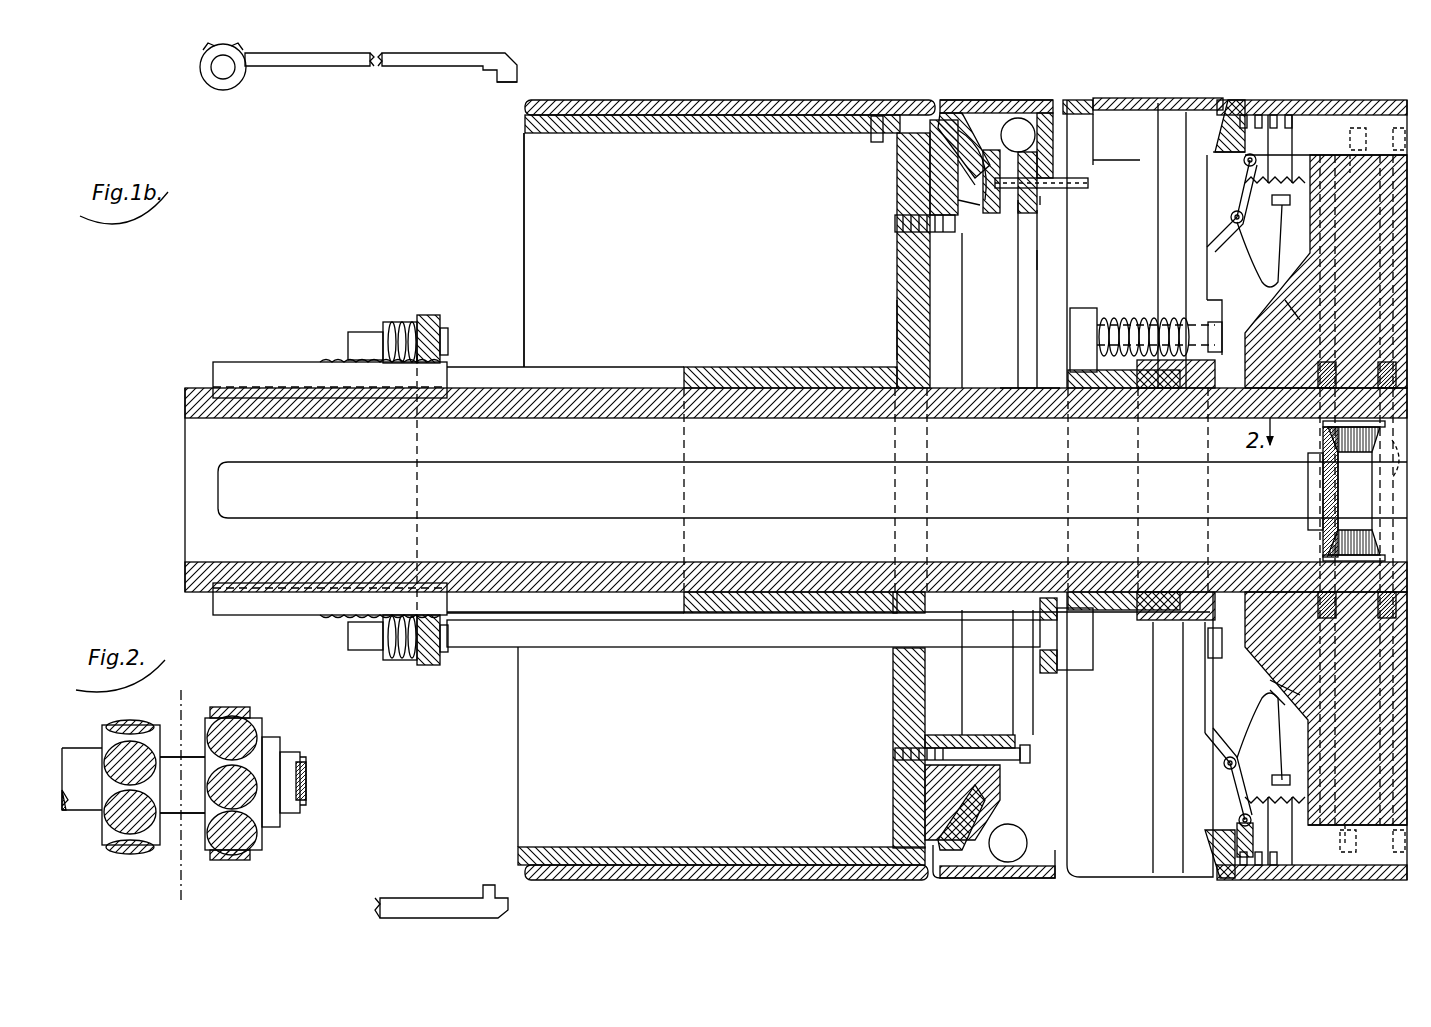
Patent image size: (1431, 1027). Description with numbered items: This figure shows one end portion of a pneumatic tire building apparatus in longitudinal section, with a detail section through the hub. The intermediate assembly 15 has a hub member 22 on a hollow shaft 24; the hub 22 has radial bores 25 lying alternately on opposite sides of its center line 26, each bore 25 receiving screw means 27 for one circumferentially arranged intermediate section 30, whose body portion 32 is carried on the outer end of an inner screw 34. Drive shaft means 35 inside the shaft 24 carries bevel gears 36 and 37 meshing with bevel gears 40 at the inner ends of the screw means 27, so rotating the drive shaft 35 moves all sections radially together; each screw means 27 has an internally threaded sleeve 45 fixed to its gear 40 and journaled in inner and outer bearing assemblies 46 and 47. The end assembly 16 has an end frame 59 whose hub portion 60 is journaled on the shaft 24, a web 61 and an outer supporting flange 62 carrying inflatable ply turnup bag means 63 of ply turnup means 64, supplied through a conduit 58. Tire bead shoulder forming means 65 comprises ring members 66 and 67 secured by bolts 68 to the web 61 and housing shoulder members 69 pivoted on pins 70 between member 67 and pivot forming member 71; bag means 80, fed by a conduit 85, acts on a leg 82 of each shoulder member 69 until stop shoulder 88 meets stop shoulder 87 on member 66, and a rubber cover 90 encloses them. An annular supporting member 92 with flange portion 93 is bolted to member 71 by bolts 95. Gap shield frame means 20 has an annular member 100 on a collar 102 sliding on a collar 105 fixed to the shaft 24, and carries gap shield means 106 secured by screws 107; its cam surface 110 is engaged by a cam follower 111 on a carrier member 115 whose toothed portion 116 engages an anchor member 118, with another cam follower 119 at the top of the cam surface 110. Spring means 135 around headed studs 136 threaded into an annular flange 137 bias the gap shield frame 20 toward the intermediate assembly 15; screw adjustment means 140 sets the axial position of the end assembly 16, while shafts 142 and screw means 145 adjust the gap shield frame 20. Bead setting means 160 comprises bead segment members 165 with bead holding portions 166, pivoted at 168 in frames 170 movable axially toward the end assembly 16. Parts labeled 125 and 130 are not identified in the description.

In FIG. 1B, the intermediate assembly 15 is at (1292, 652).
In FIG. 1B, the end assembly 16 is at (1045, 259).
In FIG. 1B, the gap shield frame means 20 is at (1190, 186).
In FIG. 1B, the hub member 22 is at (1300, 346).
In FIG. 1B, the hollow shaft 24 is at (1006, 390).
In FIG. 1B, the radially extending bore 25 is at (1318, 373).
In FIG. 1B, the center line 26 is at (1360, 455).
In FIG. 2, the center line 26 is at (187, 705).
In FIG. 1B, the screw means 27 is at (1270, 690).
In FIG. 2, the screw means 27 is at (147, 730).
In FIG. 1B, the intermediate section 30 is at (1387, 100).
In FIG. 1B, the body portion 32 is at (1330, 115).
In FIG. 1B, the inner screw 34 is at (1352, 115).
In FIG. 1B, the drive shaft means 35 is at (1040, 460).
In FIG. 2, the drive shaft means 35 is at (292, 755).
In FIG. 2, the bevel gear 36 is at (266, 748).
In FIG. 1B, the bevel gear 37 is at (1310, 476).
In FIG. 2, the bevel gear 37 is at (110, 745).
In FIG. 1B, the bevel gear 40 is at (1360, 538).
In FIG. 2, the bevel gear 40 is at (200, 818).
In FIG. 1B, the internally threaded sleeve 45 is at (1290, 311).
In FIG. 1B, the inner bearing assembly 46 is at (1322, 428).
In FIG. 1B, the outer bearing assembly 47 is at (1372, 158).
In FIG. 1B, the conduit 58 is at (870, 140).
In FIG. 1B, the end frame 59 is at (895, 280).
In FIG. 1B, the annular hub portion 60 is at (779, 367).
In FIG. 1B, the annular web 61 is at (900, 325).
In FIG. 1B, the outer supporting flange 62 is at (788, 128).
In FIG. 1B, the inflatable ply turnup bag means 63 is at (724, 122).
In FIG. 1B, the ply turnup means 64 is at (745, 98).
In FIG. 1B, the tire bead shoulder forming means 65 is at (1052, 198).
In FIG. 1B, the annular ring member 66 is at (946, 240).
In FIG. 1B, the annular ring member 67 is at (992, 245).
In FIG. 1B, the bolt 68 is at (900, 223).
In FIG. 1B, the shoulder member 69 is at (968, 118).
In FIG. 1B, the pin 70 is at (1019, 123).
In FIG. 1B, the annular pivot forming member 71 is at (1058, 150).
In FIG. 1B, the inflatable tire bead shoulder bag means 80 is at (955, 162).
In FIG. 1B, the leg 82 is at (950, 200).
In FIG. 1B, the conduit 85 is at (1088, 182).
In FIG. 1B, the stop shoulder 87 is at (945, 152).
In FIG. 1B, the stop shoulder 88 is at (958, 195).
In FIG. 1B, the annular rubber sleeve 90 is at (985, 105).
In FIG. 1B, the annular supporting member 92 is at (1076, 99).
In FIG. 1B, the flange portion 93 is at (1128, 110).
In FIG. 1B, the bolt 95 is at (1037, 168).
In FIG. 1B, the annular member 100 is at (1200, 209).
In FIG. 1B, the collar 102 is at (1180, 395).
In FIG. 1B, the collar 105 is at (1117, 392).
In FIG. 1B, the gap shield means 106 is at (1180, 98).
In FIG. 1B, the screw 107 is at (1172, 888).
In FIG. 1B, the cam surface 110 is at (1212, 240).
In FIG. 1B, the cam follower 111 is at (1244, 218).
In FIG. 1B, the carrier member 115 is at (1260, 252).
In FIG. 1B, the toothed portion 116 is at (1243, 188).
In FIG. 1B, the anchor member 118 is at (1292, 176).
In FIG. 1B, the cam follower 119 is at (1215, 155).
In FIG. 1B, the wedge 125 is at (1298, 98).
In FIG. 1B, the plate 130 is at (1100, 155).
In FIG. 1B, the spring means 135 is at (1128, 318).
In FIG. 1B, the headed stud 136 is at (1224, 325).
In FIG. 1B, the annular flange 137 is at (1088, 308).
In FIG. 1B, the screw adjustment means 140 is at (397, 320).
In FIG. 1B, the shaft 142 is at (713, 650).
In FIG. 1B, the screw means 145 is at (398, 665).
In FIG. 1B, the bead setting means 160 is at (404, 72).
In FIG. 1B, the bead segment member 165 is at (458, 63).
In FIG. 1B, the tire bead holding and supporting portion 166 is at (508, 84).
In FIG. 1B, the pivot 168 is at (230, 74).
In FIG. 1B, the frame 170 is at (200, 50).